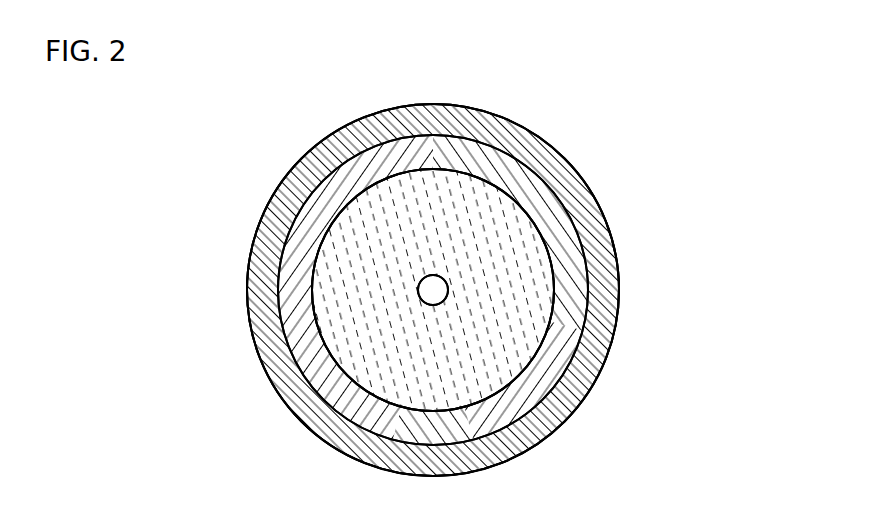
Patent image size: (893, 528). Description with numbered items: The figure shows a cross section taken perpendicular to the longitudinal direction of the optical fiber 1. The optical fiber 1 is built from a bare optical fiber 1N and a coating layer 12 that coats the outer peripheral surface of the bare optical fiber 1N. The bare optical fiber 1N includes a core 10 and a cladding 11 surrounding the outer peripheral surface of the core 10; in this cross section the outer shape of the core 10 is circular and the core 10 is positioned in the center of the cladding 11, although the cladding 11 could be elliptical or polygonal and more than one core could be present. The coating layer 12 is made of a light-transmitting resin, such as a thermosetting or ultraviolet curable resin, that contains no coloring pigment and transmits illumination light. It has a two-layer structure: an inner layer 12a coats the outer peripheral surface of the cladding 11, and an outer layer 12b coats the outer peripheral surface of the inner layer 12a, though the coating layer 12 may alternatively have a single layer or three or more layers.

The optical fiber 1 is at (280, 135).
The bare optical fiber 1N is at (706, 127).
The core 10 is at (437, 275).
The cladding 11 is at (512, 249).
The coating layer 12 is at (714, 258).
The inner layer 12a is at (584, 283).
The outer layer 12b is at (602, 338).